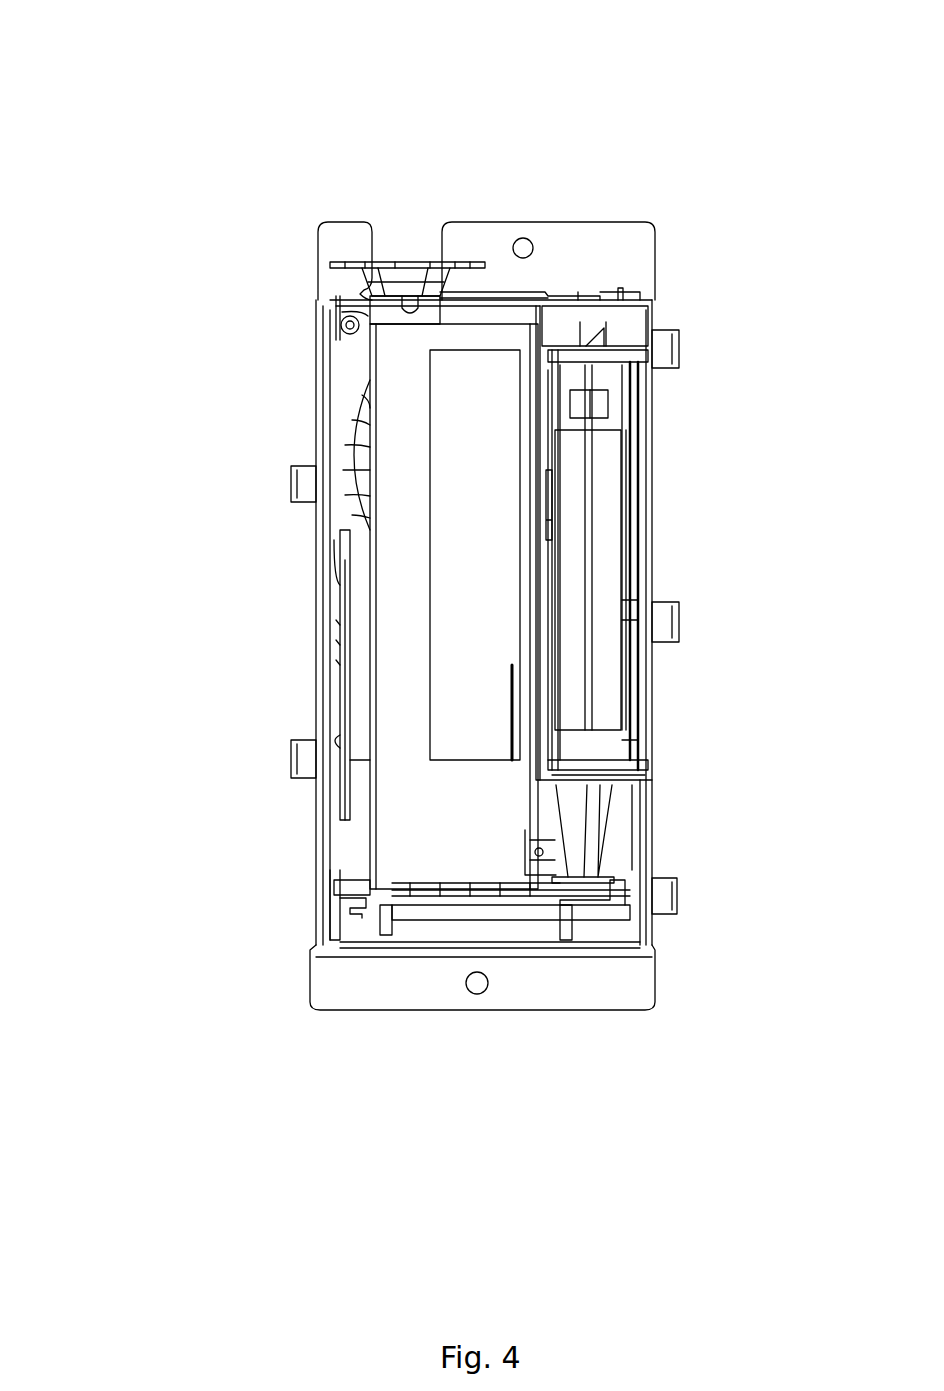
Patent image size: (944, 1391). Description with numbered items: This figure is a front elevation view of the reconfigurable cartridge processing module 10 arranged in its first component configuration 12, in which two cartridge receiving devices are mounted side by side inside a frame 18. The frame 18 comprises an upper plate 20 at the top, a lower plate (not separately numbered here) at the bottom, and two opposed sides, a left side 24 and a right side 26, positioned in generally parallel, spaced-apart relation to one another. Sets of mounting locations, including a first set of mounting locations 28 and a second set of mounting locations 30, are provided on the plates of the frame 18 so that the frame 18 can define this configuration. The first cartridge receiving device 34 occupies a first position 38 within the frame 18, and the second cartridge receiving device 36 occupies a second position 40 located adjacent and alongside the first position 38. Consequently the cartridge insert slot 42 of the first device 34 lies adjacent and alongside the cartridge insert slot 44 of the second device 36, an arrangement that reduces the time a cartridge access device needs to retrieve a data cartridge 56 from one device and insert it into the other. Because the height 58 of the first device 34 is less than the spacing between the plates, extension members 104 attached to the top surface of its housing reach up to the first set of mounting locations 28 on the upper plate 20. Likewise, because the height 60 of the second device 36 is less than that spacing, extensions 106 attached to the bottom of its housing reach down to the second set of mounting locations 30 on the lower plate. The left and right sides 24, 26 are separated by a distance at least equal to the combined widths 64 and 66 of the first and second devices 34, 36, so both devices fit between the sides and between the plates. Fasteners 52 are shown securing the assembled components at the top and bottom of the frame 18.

The reconfigurable cartridge processing module 10 is at (142, 45).
The first component configuration 12 is at (156, 128).
The frame 18 is at (312, 604).
The upper plate 20 is at (400, 262).
The left side 24 is at (306, 888).
The right side 26 is at (652, 868).
The first set of mounting locations 28 is at (412, 300).
The second set of mounting locations 30 is at (560, 300).
The first cartridge receiving device 34 is at (362, 372).
The second cartridge receiving device 36 is at (652, 432).
The first position 38 is at (418, 925).
The second position 40 is at (632, 785).
The cartridge insert slot 42 is at (485, 762).
The cartridge insert slot 44 is at (640, 586).
The fastener 52 is at (645, 290).
The data cartridge 56 is at (640, 506).
The height 58 is at (400, 880).
The height 60 is at (760, 308).
The width 64 is at (530, 830).
The width 66 is at (652, 206).
The extension member 104 is at (362, 292).
The extension 106 is at (602, 834).